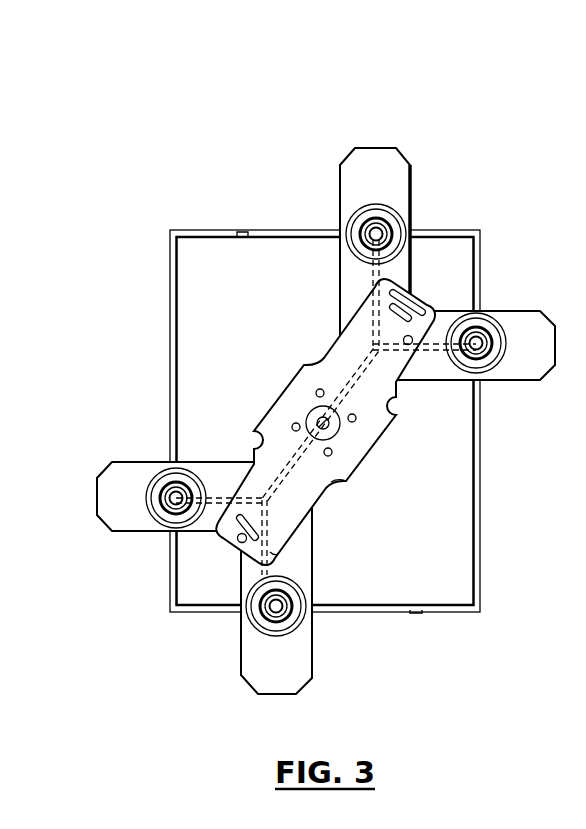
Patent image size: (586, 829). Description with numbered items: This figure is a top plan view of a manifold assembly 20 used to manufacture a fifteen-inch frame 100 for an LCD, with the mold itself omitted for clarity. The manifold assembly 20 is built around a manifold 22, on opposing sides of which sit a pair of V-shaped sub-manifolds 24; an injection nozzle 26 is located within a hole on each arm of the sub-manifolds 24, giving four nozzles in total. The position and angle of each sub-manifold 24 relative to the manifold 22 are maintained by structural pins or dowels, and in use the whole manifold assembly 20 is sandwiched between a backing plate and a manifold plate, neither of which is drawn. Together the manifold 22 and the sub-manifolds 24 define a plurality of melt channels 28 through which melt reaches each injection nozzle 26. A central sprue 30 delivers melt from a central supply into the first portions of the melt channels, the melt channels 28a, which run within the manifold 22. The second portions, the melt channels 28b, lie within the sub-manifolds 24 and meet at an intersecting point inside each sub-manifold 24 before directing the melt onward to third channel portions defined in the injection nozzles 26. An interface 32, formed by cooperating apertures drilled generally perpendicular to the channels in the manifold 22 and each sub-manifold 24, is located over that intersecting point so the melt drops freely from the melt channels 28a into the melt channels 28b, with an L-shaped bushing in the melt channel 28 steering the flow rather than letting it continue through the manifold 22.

The manifold assembly 20 is at (238, 148).
The manifold 22 is at (434, 284).
The sub-manifold 24 is at (110, 462).
The injection nozzle 26 is at (487, 350).
The melt channel 28 is at (431, 581).
The melt channel first portion 28a is at (330, 482).
The melt channel second portion 28b is at (272, 551).
The central sprue 30 is at (284, 387).
The interface 32 is at (222, 540).
The frame 100 is at (420, 613).